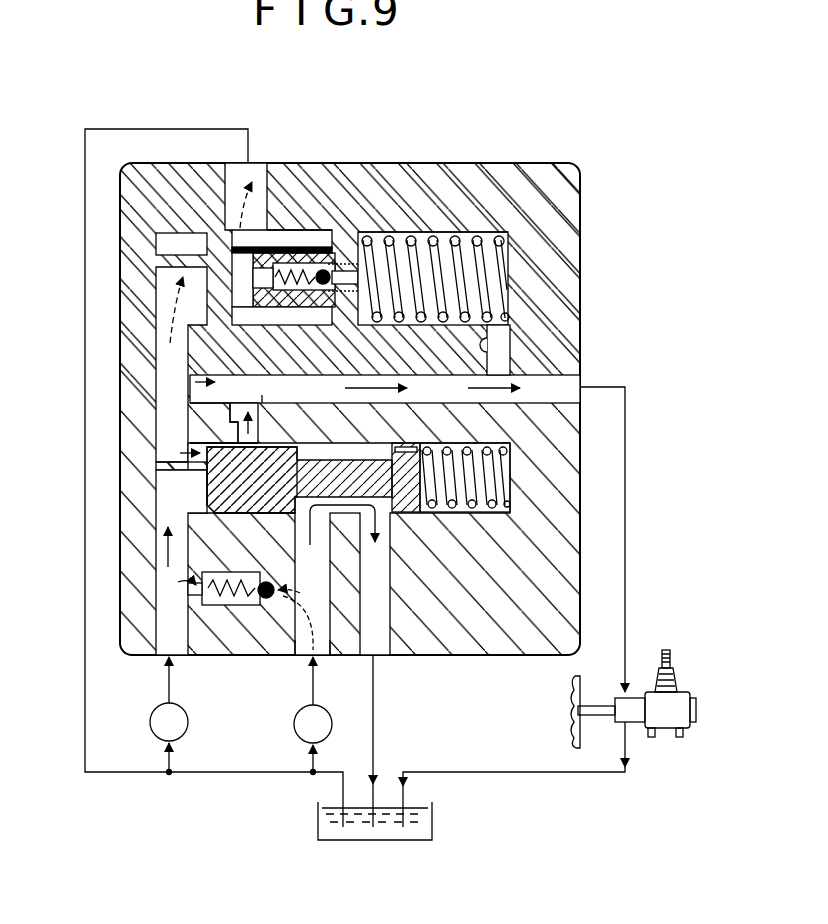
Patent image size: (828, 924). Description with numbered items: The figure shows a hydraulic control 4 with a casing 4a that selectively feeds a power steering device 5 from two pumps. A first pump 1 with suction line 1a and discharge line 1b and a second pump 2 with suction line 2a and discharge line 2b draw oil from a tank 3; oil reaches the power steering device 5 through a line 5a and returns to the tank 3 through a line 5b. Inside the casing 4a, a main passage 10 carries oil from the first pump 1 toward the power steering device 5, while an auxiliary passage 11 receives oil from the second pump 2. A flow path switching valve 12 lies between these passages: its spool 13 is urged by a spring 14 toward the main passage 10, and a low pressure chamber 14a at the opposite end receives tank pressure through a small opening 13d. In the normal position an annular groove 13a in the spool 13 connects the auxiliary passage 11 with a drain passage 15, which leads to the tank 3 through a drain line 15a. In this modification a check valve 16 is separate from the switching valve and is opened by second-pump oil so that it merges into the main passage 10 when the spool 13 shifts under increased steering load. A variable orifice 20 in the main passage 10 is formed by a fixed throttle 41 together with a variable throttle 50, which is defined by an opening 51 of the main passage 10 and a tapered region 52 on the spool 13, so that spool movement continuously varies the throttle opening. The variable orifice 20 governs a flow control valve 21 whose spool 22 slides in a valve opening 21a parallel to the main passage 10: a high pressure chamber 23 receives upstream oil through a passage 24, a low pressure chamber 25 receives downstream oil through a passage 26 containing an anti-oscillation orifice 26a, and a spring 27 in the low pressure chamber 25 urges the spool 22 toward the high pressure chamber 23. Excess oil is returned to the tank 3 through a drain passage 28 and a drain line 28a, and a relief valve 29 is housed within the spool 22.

The first pump 1 is at (190, 722).
The suction line of first pump 1a is at (165, 755).
The discharge line of first pump 1b is at (169, 686).
The second pump 2 is at (333, 724).
The suction line of second pump 2a is at (318, 763).
The discharge line of second pump 2b is at (316, 682).
The tank 3 is at (237, 772).
The control 4 is at (562, 160).
The casing 4a is at (573, 212).
The power steering device 5 is at (668, 722).
The line 5a is at (627, 558).
The line 5b is at (530, 772).
The main passage 10 is at (555, 392).
The auxiliary passage 11 is at (293, 658).
The flow path switching valve 12 is at (365, 448).
The spool 13 is at (408, 495).
The annular groove 13a is at (330, 456).
The small opening 13d is at (415, 447).
The spring 14 is at (485, 460).
The low pressure chamber 14a is at (497, 485).
The drain passage 15 is at (395, 612).
The drain line 15a is at (375, 719).
The check valve 16 is at (262, 606).
The variable orifice 20 is at (262, 400).
The flow control valve 21 is at (303, 226).
The valve opening 21a is at (423, 232).
The spool 22 is at (310, 250).
The high pressure chamber 23 is at (183, 243).
The passage 24 is at (170, 360).
The low pressure chamber 25 is at (492, 280).
The passage 26 is at (500, 363).
The orifice 26a is at (502, 340).
The spring 27 is at (473, 240).
The drain passage 28 is at (263, 172).
The drain line 28a is at (171, 129).
The relief valve 29 is at (341, 262).
The fixed throttle 41 is at (246, 408).
The variable throttle 50 is at (257, 432).
The opening 51 is at (232, 442).
The tapered region 52 is at (216, 474).